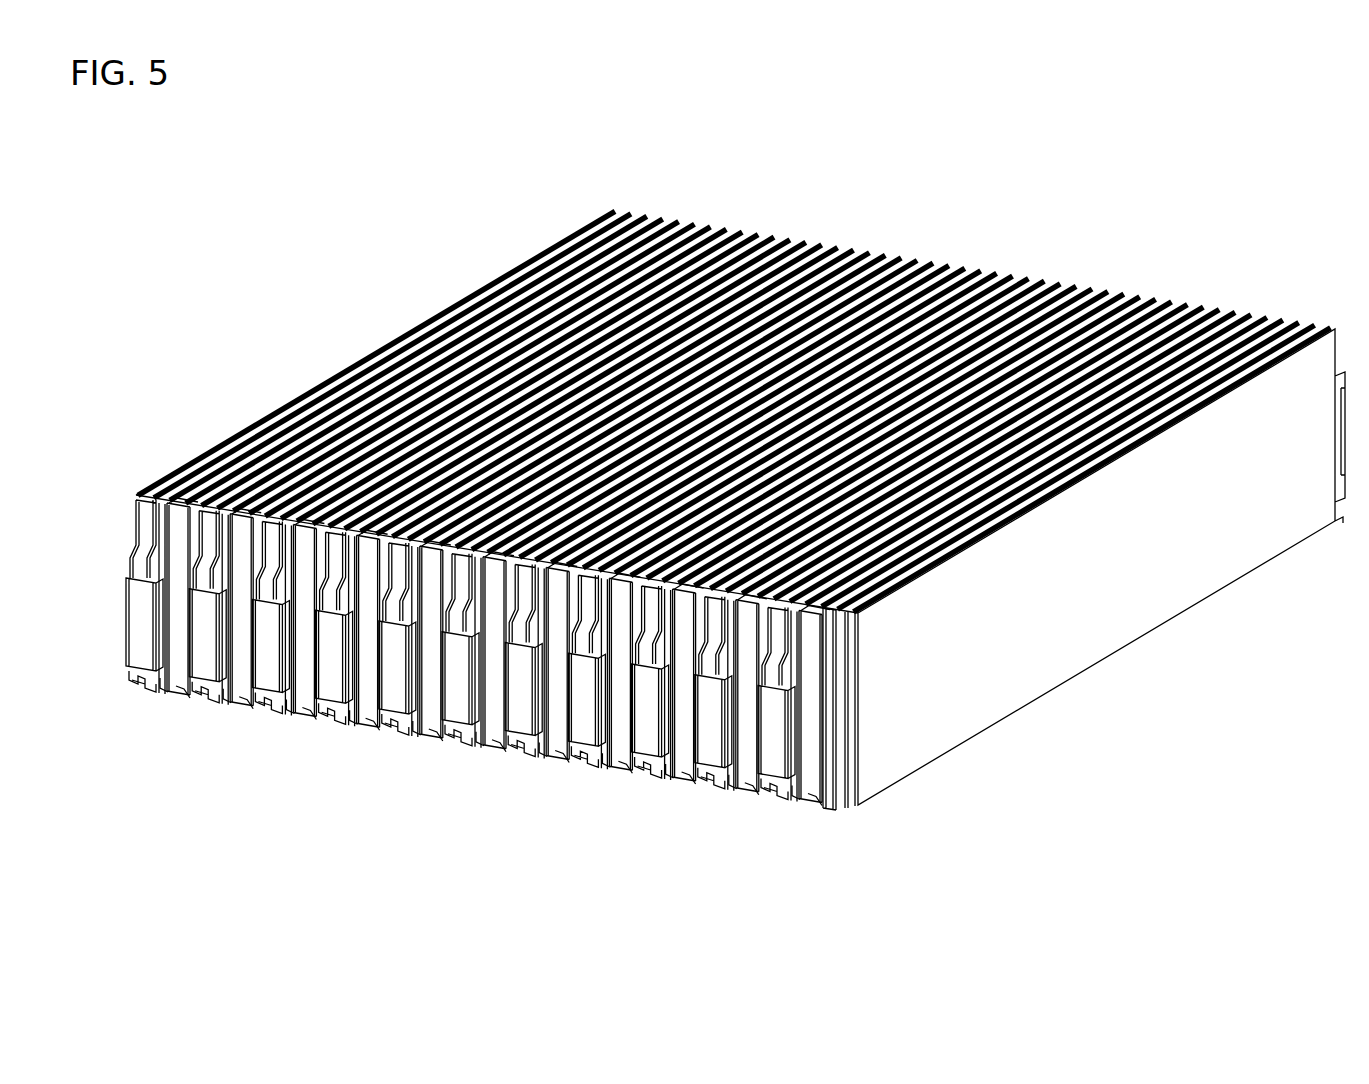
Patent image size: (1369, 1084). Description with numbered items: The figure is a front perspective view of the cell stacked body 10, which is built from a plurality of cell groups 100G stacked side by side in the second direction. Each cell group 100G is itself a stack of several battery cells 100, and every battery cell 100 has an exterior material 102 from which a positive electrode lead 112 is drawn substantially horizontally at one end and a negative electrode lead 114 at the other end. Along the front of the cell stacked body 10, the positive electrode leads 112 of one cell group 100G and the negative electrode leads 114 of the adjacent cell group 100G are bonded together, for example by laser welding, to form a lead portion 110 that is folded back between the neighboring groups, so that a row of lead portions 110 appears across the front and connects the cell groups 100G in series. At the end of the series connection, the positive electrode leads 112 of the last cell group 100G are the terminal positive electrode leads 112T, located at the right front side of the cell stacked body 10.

The cell stacked body 10 is at (1200, 152).
The battery cell 100 is at (198, 500).
The cell group 100G is at (222, 328).
The exterior material 102 is at (508, 368).
The lead portion 110 is at (277, 770).
The positive electrode lead 112 is at (178, 618).
The negative electrode lead 114 is at (203, 622).
The terminal positive electrode lead 112T is at (822, 743).